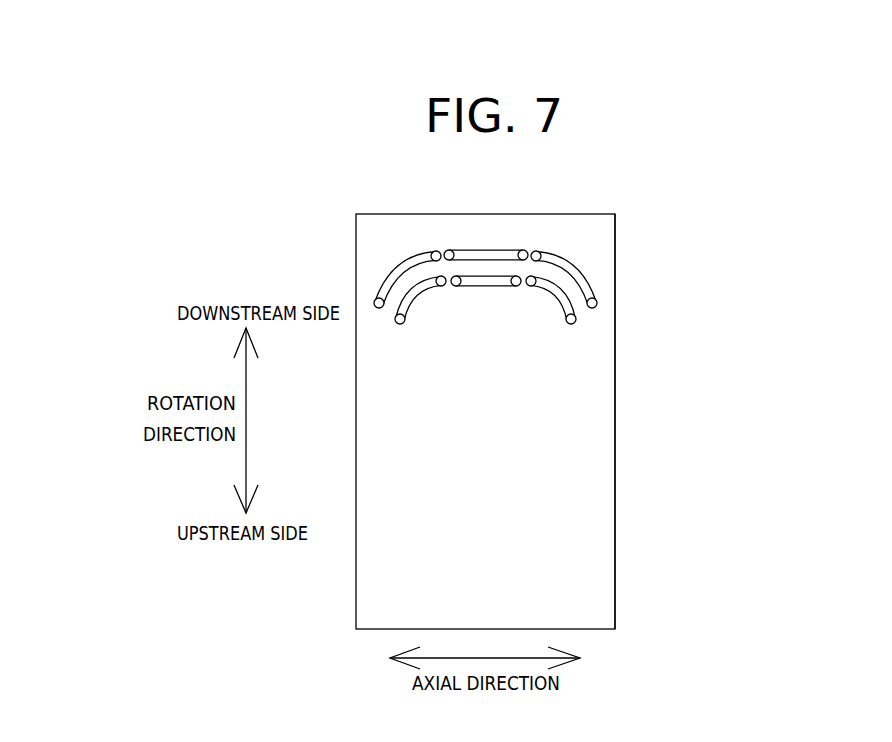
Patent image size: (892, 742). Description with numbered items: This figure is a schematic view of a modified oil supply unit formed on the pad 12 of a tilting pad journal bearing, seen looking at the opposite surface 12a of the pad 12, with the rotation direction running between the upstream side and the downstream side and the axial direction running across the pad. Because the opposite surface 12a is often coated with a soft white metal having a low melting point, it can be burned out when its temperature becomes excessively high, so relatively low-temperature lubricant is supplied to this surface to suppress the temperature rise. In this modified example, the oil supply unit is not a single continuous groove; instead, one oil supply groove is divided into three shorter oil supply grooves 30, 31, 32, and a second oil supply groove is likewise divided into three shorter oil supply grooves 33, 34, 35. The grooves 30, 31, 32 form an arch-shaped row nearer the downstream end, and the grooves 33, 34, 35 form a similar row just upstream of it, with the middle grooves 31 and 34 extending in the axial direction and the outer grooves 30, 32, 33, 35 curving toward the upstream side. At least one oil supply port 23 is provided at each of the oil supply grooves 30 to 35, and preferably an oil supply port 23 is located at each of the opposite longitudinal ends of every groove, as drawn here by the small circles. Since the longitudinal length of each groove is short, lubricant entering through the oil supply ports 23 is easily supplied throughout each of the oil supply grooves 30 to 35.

The pad 12 is at (676, 248).
The opposite surface 12a is at (605, 453).
The oil supply port 23 is at (449, 250).
The oil supply groove 30 is at (400, 260).
The oil supply groove 31 is at (487, 250).
The oil supply groove 32 is at (572, 260).
The oil supply groove 33 is at (417, 298).
The oil supply groove 34 is at (487, 287).
The oil supply groove 35 is at (555, 298).